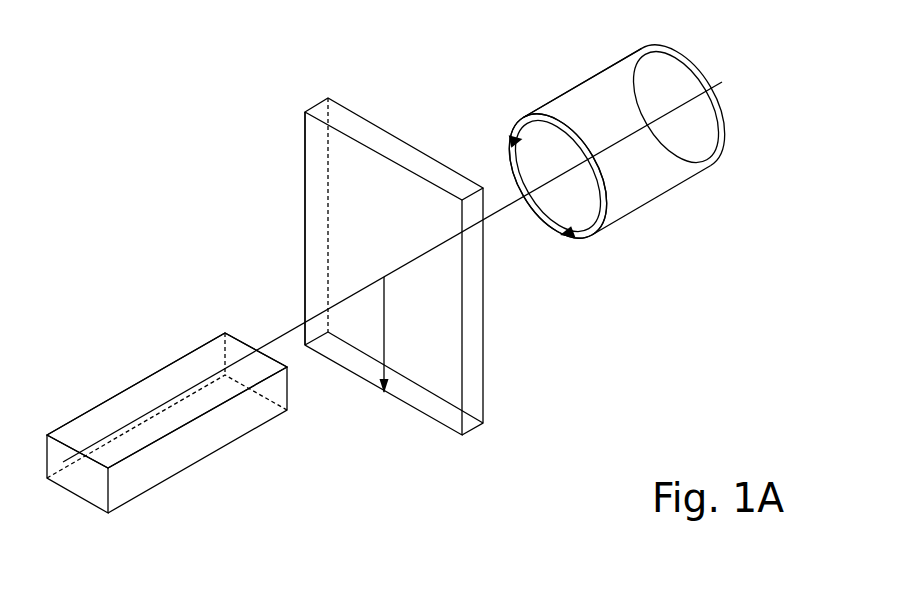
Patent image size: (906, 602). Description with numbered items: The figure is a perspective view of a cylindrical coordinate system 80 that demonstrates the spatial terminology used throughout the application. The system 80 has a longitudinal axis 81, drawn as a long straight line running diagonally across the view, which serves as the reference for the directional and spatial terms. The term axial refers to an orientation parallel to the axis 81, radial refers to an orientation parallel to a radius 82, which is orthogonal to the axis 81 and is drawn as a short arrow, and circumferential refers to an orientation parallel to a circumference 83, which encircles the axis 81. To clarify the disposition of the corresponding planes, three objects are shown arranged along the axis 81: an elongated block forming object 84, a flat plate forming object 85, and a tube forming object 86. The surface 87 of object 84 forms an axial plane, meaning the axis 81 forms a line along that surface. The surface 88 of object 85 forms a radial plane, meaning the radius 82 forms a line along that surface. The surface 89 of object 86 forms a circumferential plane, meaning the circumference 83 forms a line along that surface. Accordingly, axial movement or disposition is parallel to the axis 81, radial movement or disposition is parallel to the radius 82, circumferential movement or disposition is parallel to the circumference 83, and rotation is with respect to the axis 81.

The cylindrical coordinate system 80 is at (267, 152).
The longitudinal axis 81 is at (707, 92).
The radius 82 is at (384, 327).
The circumference 83 is at (513, 143).
The object 84 is at (133, 500).
The object 85 is at (493, 428).
The object 86 is at (641, 208).
The surface 87 is at (128, 403).
The surface 88 is at (320, 225).
The surface 89 is at (585, 83).